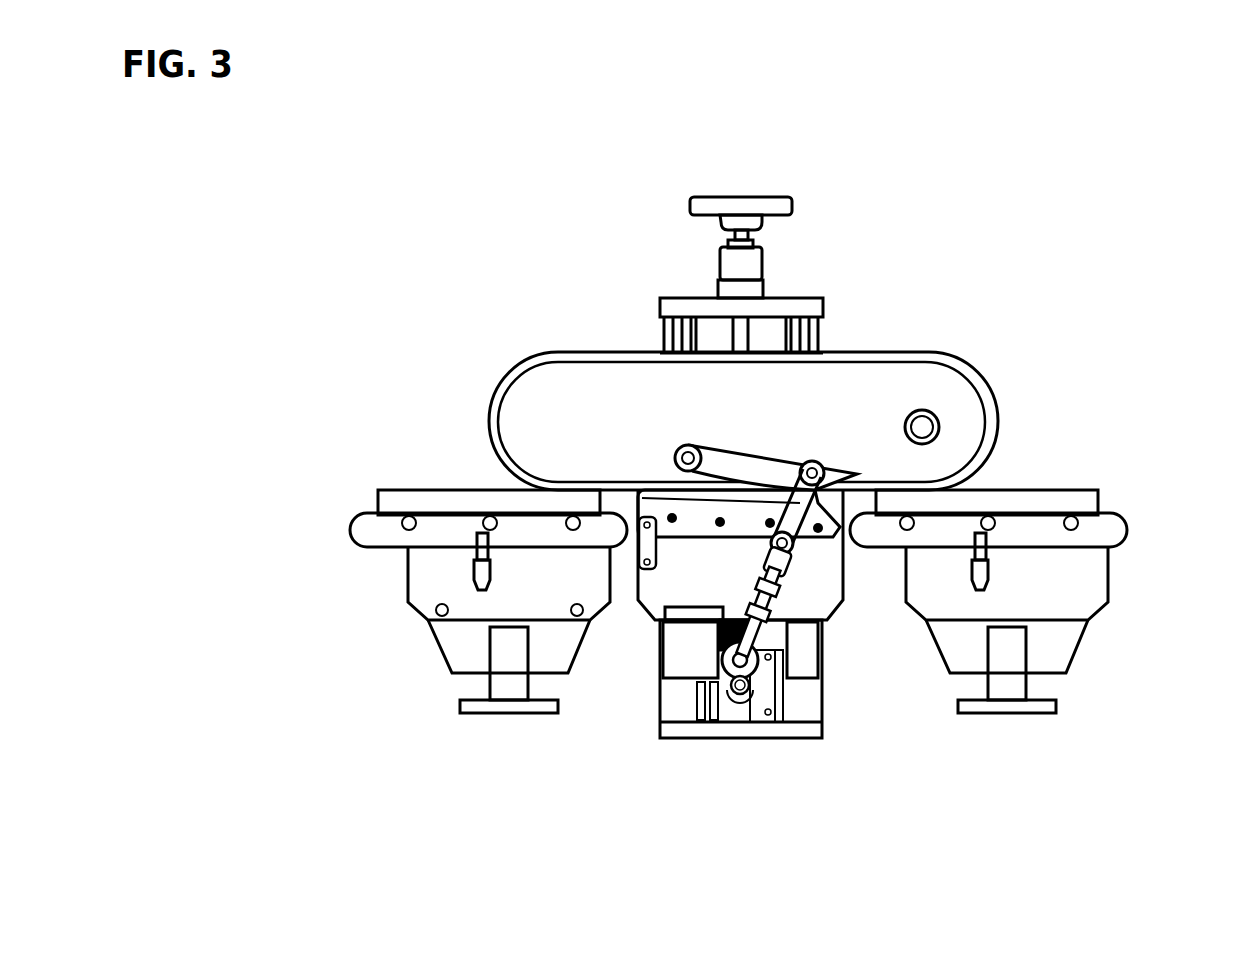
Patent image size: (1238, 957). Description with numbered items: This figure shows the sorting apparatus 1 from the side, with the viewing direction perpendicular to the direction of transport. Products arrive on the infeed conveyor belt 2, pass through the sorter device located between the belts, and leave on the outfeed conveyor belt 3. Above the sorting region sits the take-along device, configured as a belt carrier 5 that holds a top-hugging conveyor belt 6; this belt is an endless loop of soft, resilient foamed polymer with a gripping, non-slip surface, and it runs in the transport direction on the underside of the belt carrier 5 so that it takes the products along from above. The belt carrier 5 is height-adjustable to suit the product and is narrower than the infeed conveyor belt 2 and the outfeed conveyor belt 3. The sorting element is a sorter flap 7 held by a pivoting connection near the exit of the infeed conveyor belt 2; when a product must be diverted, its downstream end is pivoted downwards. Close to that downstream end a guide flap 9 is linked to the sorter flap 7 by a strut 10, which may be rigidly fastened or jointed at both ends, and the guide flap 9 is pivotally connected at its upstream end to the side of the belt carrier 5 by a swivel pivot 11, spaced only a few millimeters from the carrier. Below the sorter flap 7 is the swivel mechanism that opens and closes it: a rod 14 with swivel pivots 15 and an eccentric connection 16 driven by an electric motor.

The sorting apparatus 1 is at (915, 222).
The infeed conveyor belt 2 is at (440, 495).
The outfeed conveyor belt 3 is at (1000, 502).
The belt carrier 5 is at (535, 402).
The top-hugging conveyor belt 6 is at (587, 350).
The sorter flap 7 is at (708, 516).
The guide flap 9 is at (767, 465).
The strut 10 is at (803, 503).
The swivel pivot 11 is at (647, 543).
The rod 14 is at (795, 590).
The swivel pivots 15 is at (749, 672).
The eccentric connection 16 is at (743, 706).